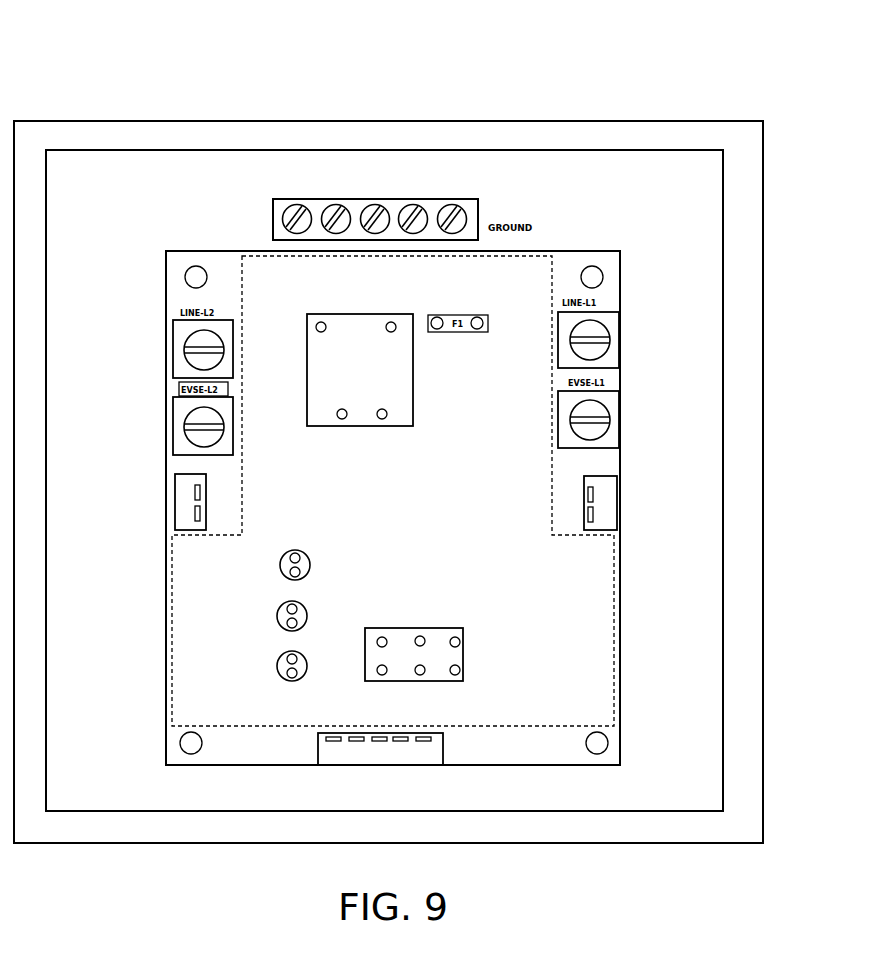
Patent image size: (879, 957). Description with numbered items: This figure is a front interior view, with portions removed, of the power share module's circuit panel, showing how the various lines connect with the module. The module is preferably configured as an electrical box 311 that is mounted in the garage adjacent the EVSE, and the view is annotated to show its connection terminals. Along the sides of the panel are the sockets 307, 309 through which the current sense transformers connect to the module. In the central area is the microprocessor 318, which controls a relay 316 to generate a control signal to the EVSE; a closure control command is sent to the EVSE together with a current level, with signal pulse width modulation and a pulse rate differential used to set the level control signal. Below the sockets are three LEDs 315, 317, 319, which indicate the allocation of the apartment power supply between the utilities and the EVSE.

The electrical box 311 is at (138, 91).
The socket 307 is at (190, 505).
The socket 309 is at (612, 524).
The LED 315 is at (281, 562).
The LED 317 is at (282, 614).
The LED 319 is at (282, 664).
The relay 316 is at (464, 655).
The microprocessor 318 is at (364, 428).